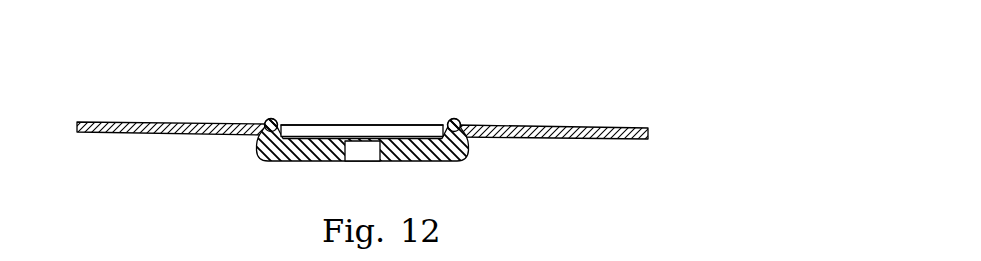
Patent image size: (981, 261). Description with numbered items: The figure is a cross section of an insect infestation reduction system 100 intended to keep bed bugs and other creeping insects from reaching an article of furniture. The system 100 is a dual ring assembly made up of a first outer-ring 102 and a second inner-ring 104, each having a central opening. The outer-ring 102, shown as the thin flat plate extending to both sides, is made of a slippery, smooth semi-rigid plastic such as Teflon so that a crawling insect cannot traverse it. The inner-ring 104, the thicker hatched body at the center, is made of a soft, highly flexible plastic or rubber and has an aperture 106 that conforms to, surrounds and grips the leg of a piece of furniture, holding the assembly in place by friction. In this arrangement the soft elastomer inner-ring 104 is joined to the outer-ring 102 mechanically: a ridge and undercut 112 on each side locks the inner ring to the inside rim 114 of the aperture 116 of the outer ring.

The insect infestation reduction system 100 is at (572, 47).
The first outer-ring 102 is at (205, 135).
The second inner-ring 104 is at (463, 158).
The aperture 106 is at (353, 157).
The ridge and undercut 112 is at (256, 114).
The inside rim 114 is at (323, 124).
The aperture 116 is at (388, 120).